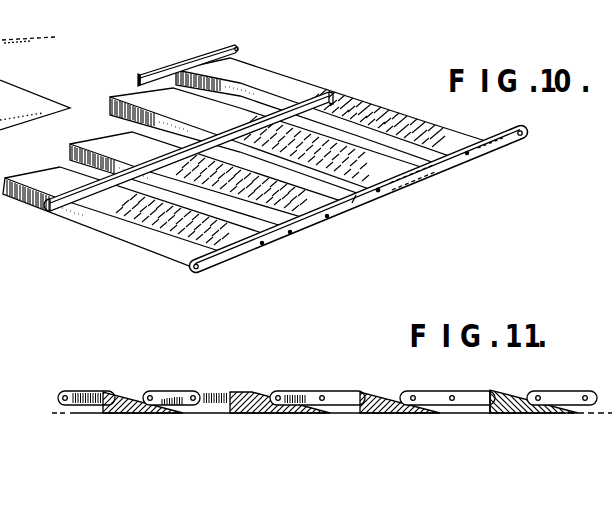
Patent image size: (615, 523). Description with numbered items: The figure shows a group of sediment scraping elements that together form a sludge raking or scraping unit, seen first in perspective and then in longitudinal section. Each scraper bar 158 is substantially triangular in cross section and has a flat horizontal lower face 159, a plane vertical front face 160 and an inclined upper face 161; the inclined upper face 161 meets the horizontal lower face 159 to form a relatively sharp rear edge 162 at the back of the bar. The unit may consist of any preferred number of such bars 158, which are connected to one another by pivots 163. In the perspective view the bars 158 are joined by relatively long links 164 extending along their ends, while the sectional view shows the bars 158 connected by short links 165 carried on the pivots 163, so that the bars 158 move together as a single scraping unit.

In FIG. 10, the scraper bar 158 is at (363, 108).
In FIG. 11, the scraper bar 158 is at (373, 400).
In FIG. 11, the flat horizontal lower face 159 is at (532, 408).
In FIG. 11, the plane vertical front face 160 is at (489, 407).
In FIG. 11, the inclined upper face 161 is at (528, 393).
In FIG. 11, the rear edge 162 is at (577, 413).
In FIG. 10, the pivot 163 is at (209, 262).
In FIG. 10, the long link 164 is at (366, 196).
In FIG. 11, the short link 165 is at (86, 397).